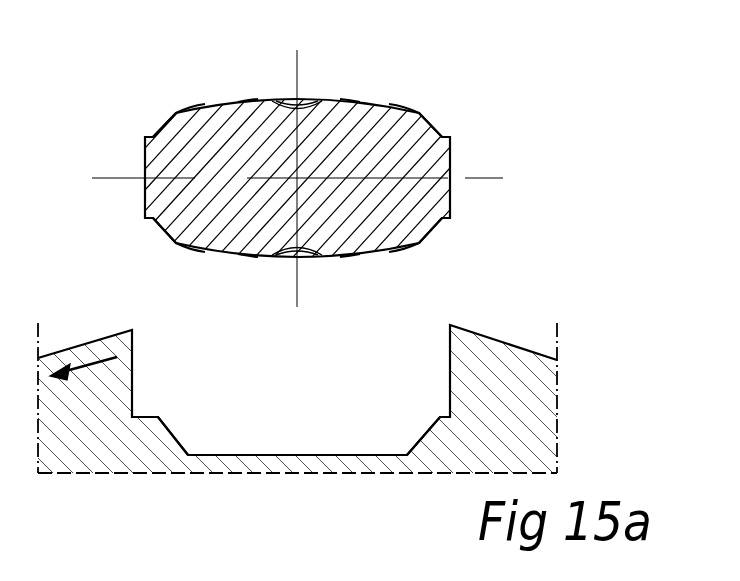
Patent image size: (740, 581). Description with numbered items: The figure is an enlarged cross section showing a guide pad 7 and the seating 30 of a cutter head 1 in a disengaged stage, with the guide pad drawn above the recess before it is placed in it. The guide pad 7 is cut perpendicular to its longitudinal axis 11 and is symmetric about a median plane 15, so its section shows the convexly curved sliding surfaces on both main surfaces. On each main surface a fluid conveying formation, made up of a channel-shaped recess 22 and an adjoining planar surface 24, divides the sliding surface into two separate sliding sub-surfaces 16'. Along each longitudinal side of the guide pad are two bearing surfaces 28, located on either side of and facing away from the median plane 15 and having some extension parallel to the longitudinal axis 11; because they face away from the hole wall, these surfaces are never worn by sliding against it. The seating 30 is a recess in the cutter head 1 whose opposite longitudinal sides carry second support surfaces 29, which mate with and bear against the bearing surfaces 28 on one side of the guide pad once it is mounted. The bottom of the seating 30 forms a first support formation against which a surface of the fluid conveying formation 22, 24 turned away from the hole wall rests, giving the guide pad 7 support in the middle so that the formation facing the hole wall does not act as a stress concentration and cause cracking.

The cutter head 1 is at (538, 392).
The guide pad 7 is at (421, 156).
The longitudinal axis 11 is at (303, 172).
The median plane 15 is at (490, 173).
The sliding sub-surfaces 16' is at (301, 181).
The channel-shaped recess 22 is at (318, 100).
The planar surface 24 is at (248, 101).
The bearing surfaces 28 is at (147, 137).
The second support surfaces 29 is at (147, 417).
The seating 30 is at (296, 406).